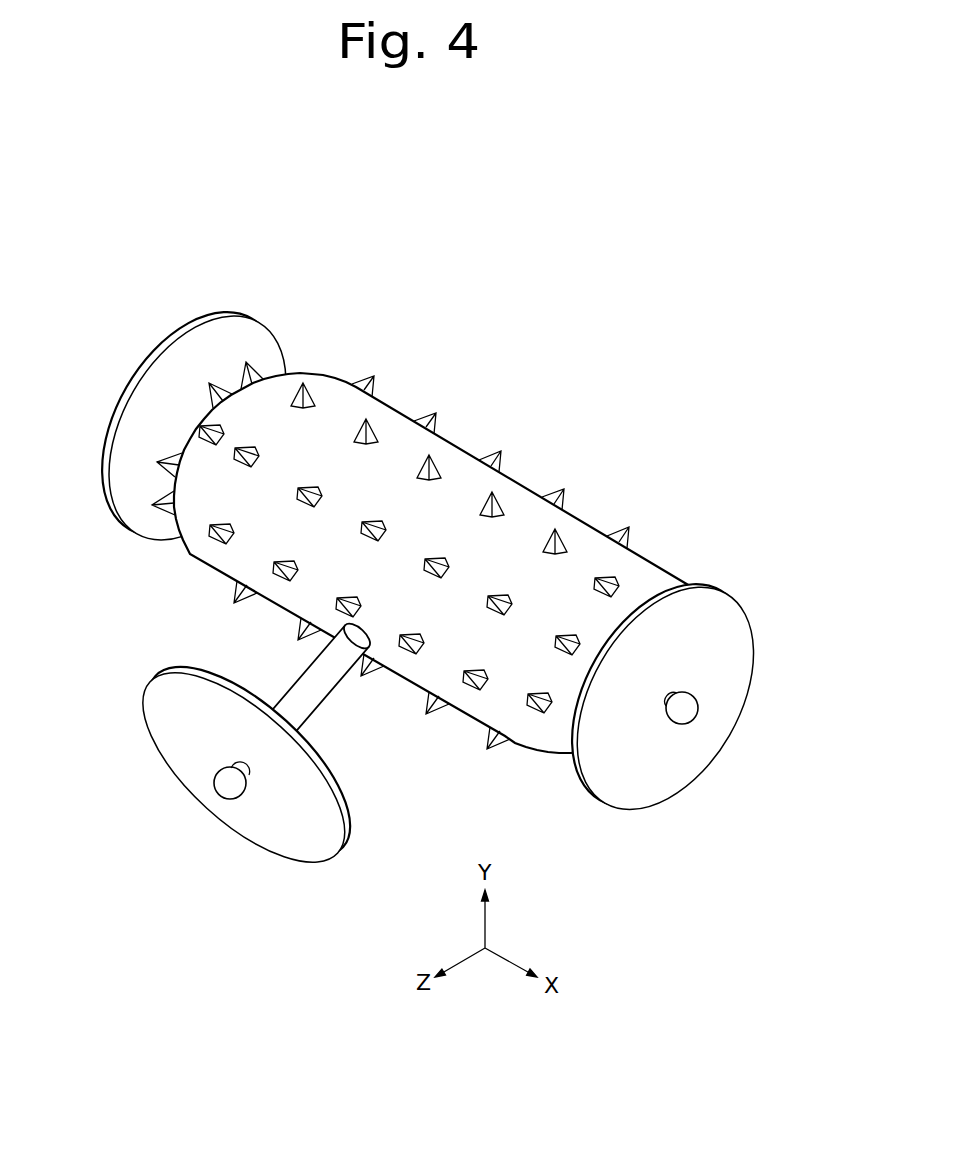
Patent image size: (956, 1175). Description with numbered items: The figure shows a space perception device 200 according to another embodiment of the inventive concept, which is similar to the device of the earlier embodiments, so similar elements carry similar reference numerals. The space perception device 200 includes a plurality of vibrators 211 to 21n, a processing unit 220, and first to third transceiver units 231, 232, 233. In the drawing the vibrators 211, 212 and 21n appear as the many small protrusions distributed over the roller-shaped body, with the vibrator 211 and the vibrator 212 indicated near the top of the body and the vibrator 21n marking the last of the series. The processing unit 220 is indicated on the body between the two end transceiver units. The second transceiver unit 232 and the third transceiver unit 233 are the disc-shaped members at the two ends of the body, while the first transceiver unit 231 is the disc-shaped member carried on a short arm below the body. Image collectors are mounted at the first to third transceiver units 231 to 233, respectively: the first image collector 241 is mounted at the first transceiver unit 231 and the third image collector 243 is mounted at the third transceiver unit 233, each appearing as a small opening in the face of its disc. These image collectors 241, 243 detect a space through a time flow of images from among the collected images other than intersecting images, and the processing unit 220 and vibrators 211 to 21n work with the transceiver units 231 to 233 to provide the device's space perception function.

The space perception device 200 is at (749, 263).
The vibrator 211 is at (501, 503).
The vibrator 212 is at (434, 464).
The vibrator 21n is at (365, 378).
The processing unit 220 is at (426, 527).
The first transceiver unit 231 is at (160, 712).
The second transceiver unit 232 is at (193, 323).
The third transceiver unit 233 is at (733, 646).
The first image collector 241 is at (220, 786).
The third image collector 243 is at (690, 714).